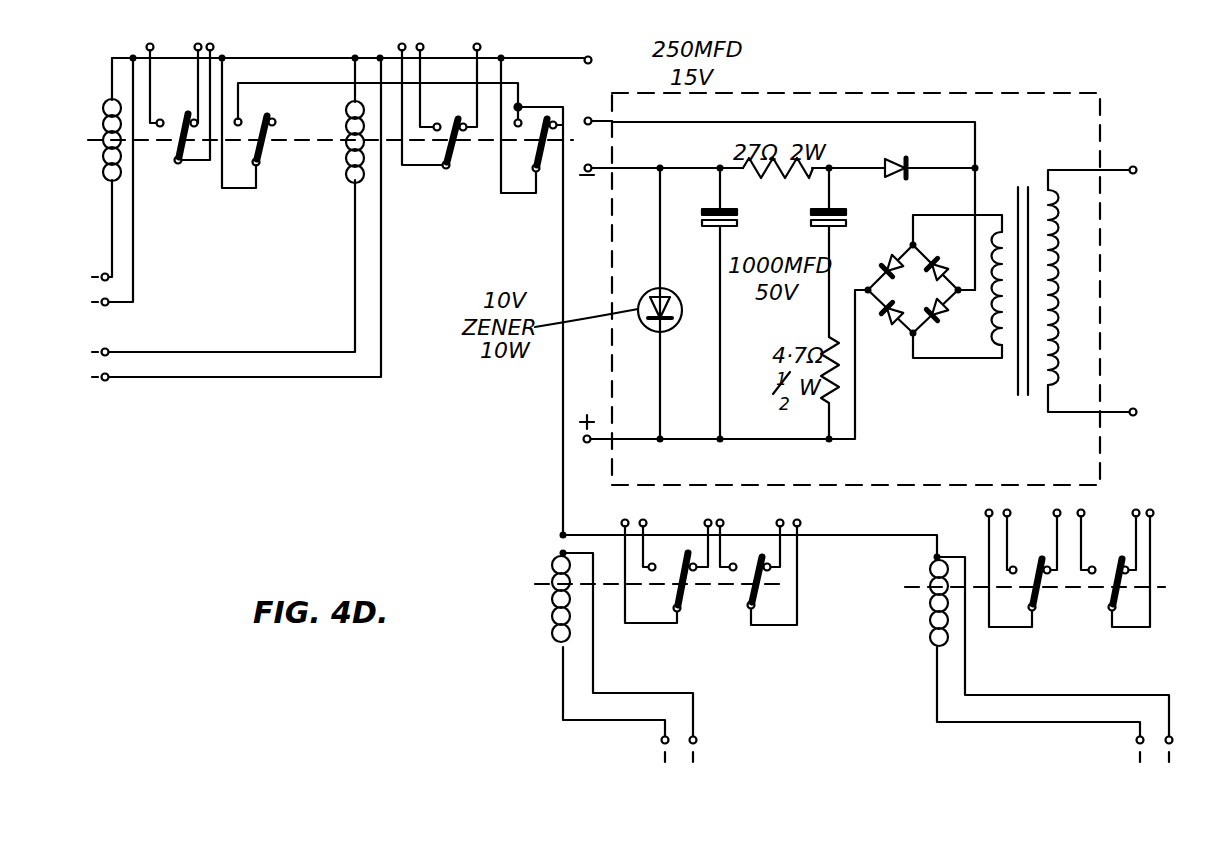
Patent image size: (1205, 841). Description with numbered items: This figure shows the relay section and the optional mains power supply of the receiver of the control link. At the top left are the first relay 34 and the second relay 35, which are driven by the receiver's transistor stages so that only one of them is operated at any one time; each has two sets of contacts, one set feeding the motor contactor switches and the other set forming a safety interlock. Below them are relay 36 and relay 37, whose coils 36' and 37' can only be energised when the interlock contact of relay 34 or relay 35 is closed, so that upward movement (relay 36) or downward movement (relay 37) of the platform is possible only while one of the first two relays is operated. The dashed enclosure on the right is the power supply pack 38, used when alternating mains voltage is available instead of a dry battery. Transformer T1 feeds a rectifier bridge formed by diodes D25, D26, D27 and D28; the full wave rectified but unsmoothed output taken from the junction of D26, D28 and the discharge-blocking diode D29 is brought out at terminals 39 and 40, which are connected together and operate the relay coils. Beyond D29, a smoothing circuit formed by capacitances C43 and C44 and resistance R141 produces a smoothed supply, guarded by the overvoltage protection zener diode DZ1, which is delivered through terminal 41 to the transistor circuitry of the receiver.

The first relay 34 is at (103, 184).
The second relay 35 is at (347, 172).
The relay 36 is at (659, 594).
The coil of relay 36 36' is at (597, 654).
The relay 37 is at (1035, 589).
The coil of relay 37 37' is at (1022, 659).
The power supply pack 38 is at (877, 96).
The terminal 39 is at (587, 117).
The terminal 40 is at (591, 57).
The terminal 41 is at (592, 164).
The resistance R141 is at (781, 174).
The capacitance C43 is at (847, 218).
The capacitance C44 is at (697, 222).
The zener diode DZ1 is at (690, 283).
The diode D25 is at (875, 256).
The diode D26 is at (948, 241).
The diode D27 is at (883, 316).
The diode D28 is at (940, 319).
The discharge-blocking diode D29 is at (900, 158).
The transformer T1 is at (1022, 183).